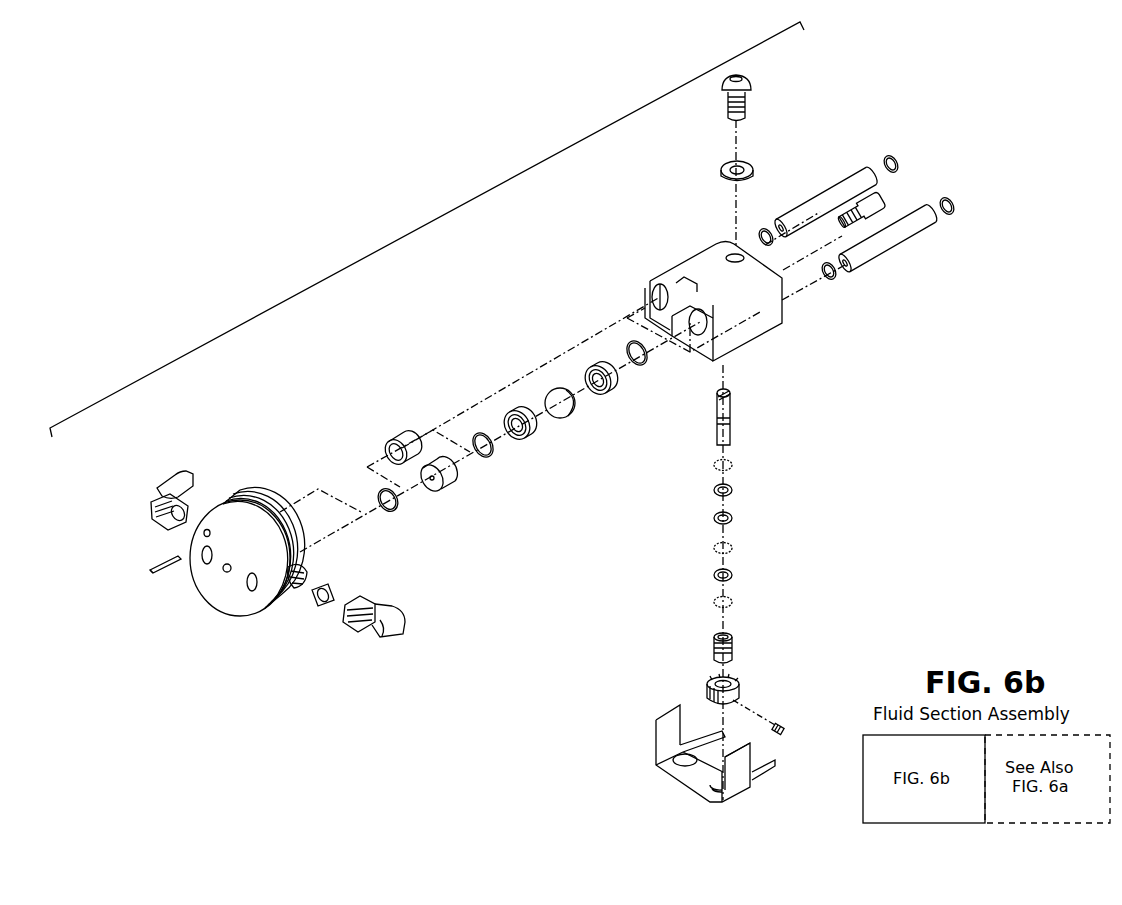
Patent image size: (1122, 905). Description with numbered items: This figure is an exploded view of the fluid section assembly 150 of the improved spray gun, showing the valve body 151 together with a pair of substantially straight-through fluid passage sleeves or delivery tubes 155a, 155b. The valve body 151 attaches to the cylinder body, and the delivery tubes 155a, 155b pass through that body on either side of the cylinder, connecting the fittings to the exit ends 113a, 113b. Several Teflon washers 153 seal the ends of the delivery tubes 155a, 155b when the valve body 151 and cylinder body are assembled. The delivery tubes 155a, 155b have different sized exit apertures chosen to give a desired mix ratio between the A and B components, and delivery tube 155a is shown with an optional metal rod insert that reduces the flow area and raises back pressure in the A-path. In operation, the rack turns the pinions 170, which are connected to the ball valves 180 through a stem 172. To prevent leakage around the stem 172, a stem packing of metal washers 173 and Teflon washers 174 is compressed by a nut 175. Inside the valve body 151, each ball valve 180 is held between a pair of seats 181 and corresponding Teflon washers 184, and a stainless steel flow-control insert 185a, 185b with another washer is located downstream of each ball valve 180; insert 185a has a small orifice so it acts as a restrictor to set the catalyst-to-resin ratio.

The fluid section assembly 150 is at (456, 210).
The valve body 151 is at (705, 262).
The Teflon washers 153 is at (760, 230).
The delivery tube 155a is at (925, 233).
The delivery tube 155b is at (856, 178).
The exit end 113a is at (703, 328).
The exit end 113b is at (650, 297).
The pinion 170 is at (742, 688).
The stem 172 is at (735, 421).
The metal washers 173 is at (733, 465).
The Teflon washers 174 is at (733, 490).
The nut 175 is at (735, 641).
The ball valve 180 is at (557, 392).
The seat 181 is at (522, 440).
The o-ring 184 is at (393, 512).
The flow-control insert 185a is at (447, 485).
The flow-control insert 185b is at (404, 438).